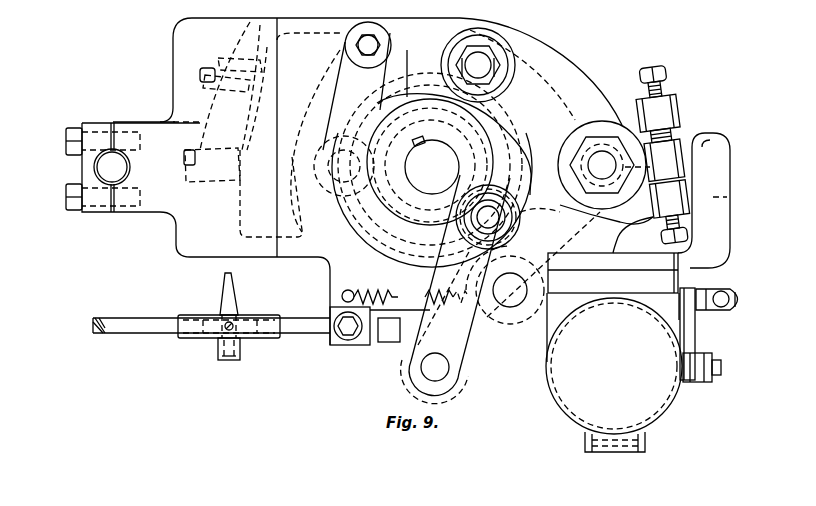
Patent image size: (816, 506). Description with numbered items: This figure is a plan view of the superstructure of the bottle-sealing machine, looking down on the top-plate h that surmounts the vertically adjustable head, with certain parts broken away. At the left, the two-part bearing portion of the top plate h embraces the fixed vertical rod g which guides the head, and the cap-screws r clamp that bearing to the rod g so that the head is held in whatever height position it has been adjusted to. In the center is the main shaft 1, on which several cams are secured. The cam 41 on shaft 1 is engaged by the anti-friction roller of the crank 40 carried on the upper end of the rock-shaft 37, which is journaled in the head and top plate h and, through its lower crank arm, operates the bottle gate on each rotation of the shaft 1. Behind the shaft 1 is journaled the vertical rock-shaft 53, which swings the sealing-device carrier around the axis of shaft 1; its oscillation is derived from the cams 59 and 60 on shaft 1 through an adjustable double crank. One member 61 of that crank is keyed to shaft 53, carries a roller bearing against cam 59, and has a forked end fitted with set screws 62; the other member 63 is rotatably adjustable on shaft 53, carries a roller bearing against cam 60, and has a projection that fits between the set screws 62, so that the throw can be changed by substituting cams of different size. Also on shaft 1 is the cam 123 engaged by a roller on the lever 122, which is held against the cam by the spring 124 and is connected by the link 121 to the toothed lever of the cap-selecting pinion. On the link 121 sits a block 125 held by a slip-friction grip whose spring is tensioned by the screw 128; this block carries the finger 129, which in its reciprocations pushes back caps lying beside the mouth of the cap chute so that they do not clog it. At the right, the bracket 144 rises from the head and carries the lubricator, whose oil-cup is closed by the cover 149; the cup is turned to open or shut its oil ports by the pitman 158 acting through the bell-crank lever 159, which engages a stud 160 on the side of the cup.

The cap-screws r is at (68, 193).
The fixed vertical rod g is at (112, 176).
The top-plate h is at (211, 258).
The shaft 1 is at (432, 165).
The rock-shaft 37 is at (441, 369).
The crank 40 is at (419, 315).
The cam 41 is at (387, 207).
The vertical rock-shaft 53 is at (602, 165).
The cam 59 is at (522, 133).
The cam 60 is at (548, 214).
The crank member 61 is at (618, 250).
The set screws 62 is at (666, 77).
The crank member 63 is at (598, 93).
The link 121 is at (144, 328).
The lever 122 is at (332, 292).
The cam 123 is at (370, 289).
The spring 124 is at (356, 338).
The block 125 is at (268, 338).
The screw 128 is at (226, 362).
The finger 129 is at (250, 295).
The bracket 144 is at (708, 258).
The cover 149 is at (614, 372).
The pitman 158 is at (733, 310).
The bell-crank lever 159 is at (696, 332).
The stud 160 is at (709, 383).